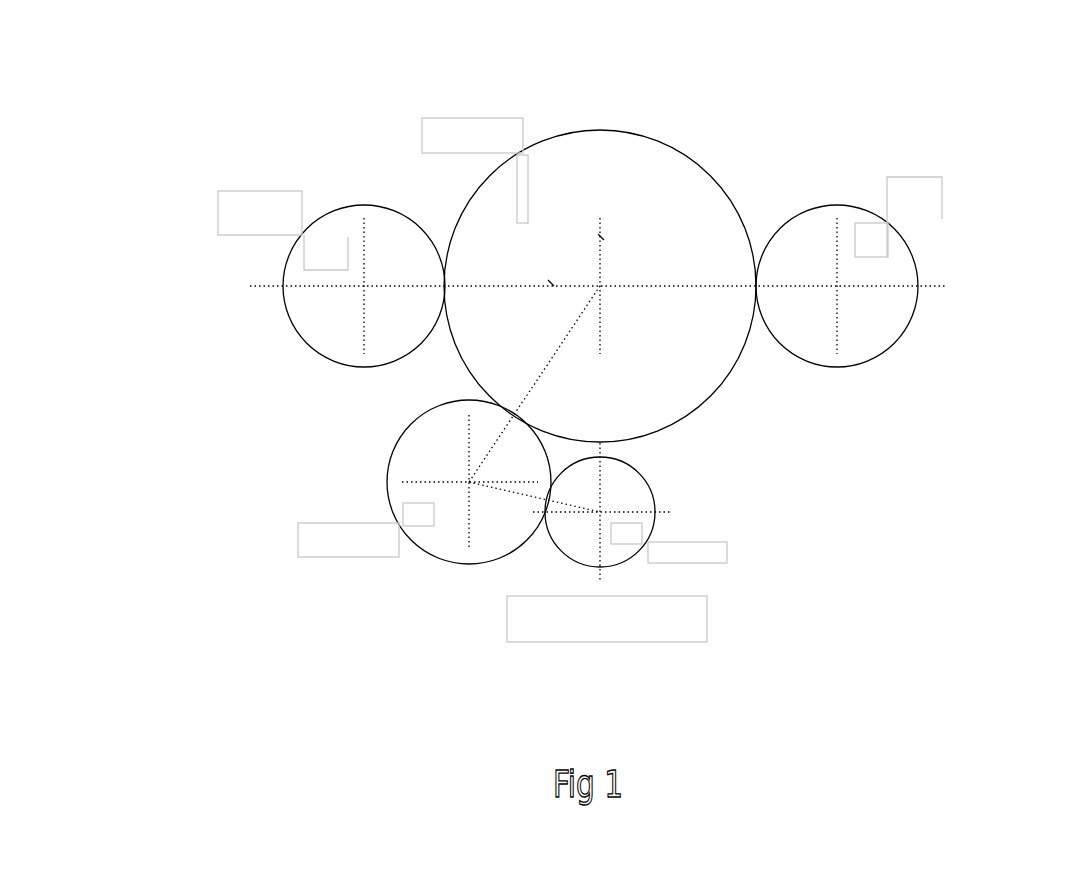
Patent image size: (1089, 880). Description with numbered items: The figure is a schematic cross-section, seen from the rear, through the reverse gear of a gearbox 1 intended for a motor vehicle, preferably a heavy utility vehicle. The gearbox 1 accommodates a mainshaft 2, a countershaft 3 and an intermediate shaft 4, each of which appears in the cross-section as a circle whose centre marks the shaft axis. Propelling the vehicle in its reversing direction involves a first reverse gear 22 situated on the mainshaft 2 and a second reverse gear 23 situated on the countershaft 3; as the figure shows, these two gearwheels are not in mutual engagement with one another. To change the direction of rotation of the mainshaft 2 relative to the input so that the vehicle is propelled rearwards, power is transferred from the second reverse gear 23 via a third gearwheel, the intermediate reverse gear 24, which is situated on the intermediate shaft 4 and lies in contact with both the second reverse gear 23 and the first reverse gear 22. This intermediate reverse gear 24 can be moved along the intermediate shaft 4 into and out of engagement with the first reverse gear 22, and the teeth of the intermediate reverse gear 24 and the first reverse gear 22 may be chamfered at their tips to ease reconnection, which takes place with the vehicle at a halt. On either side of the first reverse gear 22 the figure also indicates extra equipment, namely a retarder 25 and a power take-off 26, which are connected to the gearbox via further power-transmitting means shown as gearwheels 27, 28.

The gearbox 1 is at (965, 112).
The mainshaft 2 is at (600, 286).
The countershaft 3 is at (600, 512).
The intermediate shaft 4 is at (469, 482).
The first reverse gear 22 is at (662, 140).
The second reverse gear 23 is at (638, 552).
The intermediate reverse gear 24 is at (427, 552).
The retarder 25 is at (262, 223).
The power take-off 26 is at (940, 233).
The gearwheel 27 is at (350, 205).
The gearwheel 28 is at (837, 205).